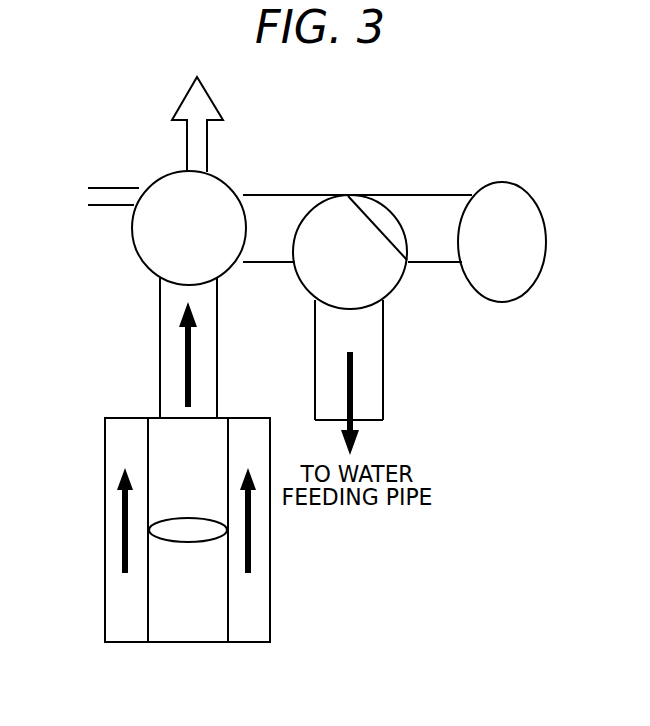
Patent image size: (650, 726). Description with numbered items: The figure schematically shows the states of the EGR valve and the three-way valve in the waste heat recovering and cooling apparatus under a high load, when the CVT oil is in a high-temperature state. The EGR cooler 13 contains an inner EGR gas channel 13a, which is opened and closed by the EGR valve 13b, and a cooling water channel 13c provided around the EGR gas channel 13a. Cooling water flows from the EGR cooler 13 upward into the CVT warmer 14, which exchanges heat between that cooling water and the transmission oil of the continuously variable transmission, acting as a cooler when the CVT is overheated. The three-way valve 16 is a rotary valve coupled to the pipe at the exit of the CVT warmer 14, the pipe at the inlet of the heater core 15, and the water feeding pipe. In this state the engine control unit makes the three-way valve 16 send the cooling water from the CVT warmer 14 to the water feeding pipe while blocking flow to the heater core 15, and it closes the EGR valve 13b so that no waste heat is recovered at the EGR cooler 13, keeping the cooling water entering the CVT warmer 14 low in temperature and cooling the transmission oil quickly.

The EGR cooler 13 is at (103, 457).
The EGR gas channel 13a is at (188, 622).
The EGR valve 13b is at (168, 527).
The cooling water channel 13c is at (125, 622).
The CVT warmer 14 is at (158, 174).
The heater core 15 is at (527, 209).
The three-way valve 16 is at (338, 203).